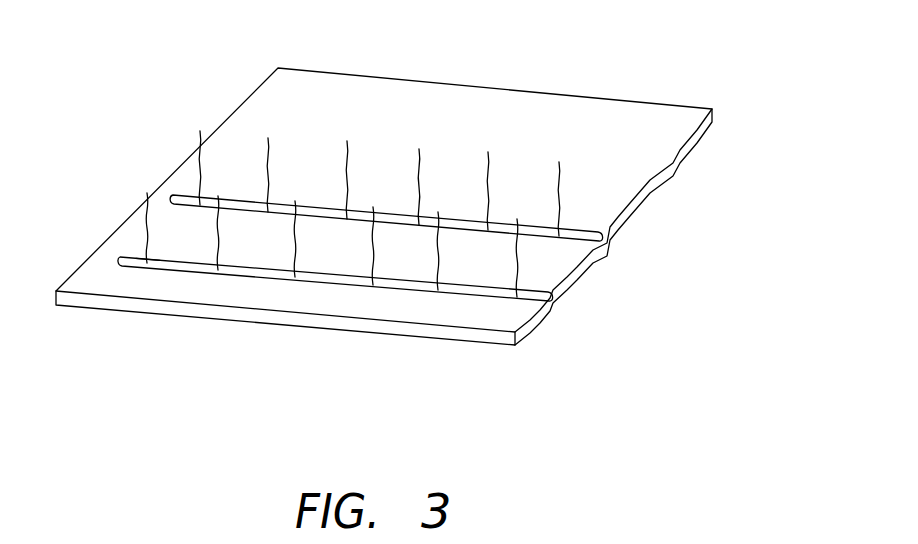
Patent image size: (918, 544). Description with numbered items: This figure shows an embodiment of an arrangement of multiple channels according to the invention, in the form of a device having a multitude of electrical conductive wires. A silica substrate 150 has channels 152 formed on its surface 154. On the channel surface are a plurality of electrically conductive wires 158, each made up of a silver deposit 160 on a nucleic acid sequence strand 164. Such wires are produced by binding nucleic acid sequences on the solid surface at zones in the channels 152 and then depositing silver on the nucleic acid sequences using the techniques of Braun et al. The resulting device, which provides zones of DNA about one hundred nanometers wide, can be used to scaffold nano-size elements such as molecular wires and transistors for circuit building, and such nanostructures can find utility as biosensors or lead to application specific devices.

The silica substrate 150 is at (675, 100).
The channels 152 is at (502, 217).
The surface 154 is at (415, 120).
The electrically conductive wires 158 is at (198, 131).
The silver deposit 160 is at (147, 193).
The nucleic acid sequence strand 164 is at (148, 252).